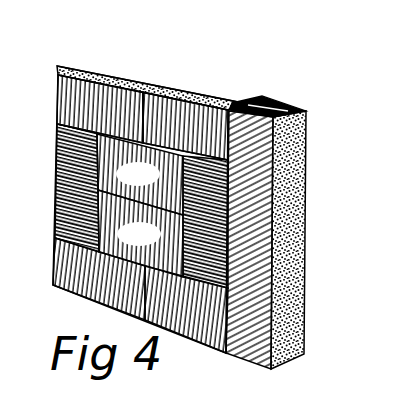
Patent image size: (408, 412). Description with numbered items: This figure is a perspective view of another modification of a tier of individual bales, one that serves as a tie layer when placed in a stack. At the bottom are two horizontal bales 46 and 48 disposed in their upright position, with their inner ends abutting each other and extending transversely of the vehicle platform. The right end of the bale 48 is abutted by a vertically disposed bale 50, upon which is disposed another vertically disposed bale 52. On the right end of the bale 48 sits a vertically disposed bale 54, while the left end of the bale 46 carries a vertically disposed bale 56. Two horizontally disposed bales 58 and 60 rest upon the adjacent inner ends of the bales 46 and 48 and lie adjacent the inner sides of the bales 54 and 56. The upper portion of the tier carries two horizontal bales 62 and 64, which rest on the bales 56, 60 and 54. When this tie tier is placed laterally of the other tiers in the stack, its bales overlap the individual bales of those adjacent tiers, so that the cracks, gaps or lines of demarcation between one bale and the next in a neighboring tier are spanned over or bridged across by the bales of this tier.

The horizontal bale 46 is at (62, 254).
The horizontal bale 48 is at (146, 320).
The vertically disposed bale 50 is at (293, 326).
The vertically disposed bale 52 is at (298, 164).
The vertically disposed bale 54 is at (205, 265).
The vertically disposed bale 56 is at (58, 184).
The horizontally disposed bale 58 is at (140, 233).
The horizontally disposed bale 60 is at (140, 174).
The horizontal bale 62 is at (101, 66).
The horizontal bale 64 is at (200, 92).